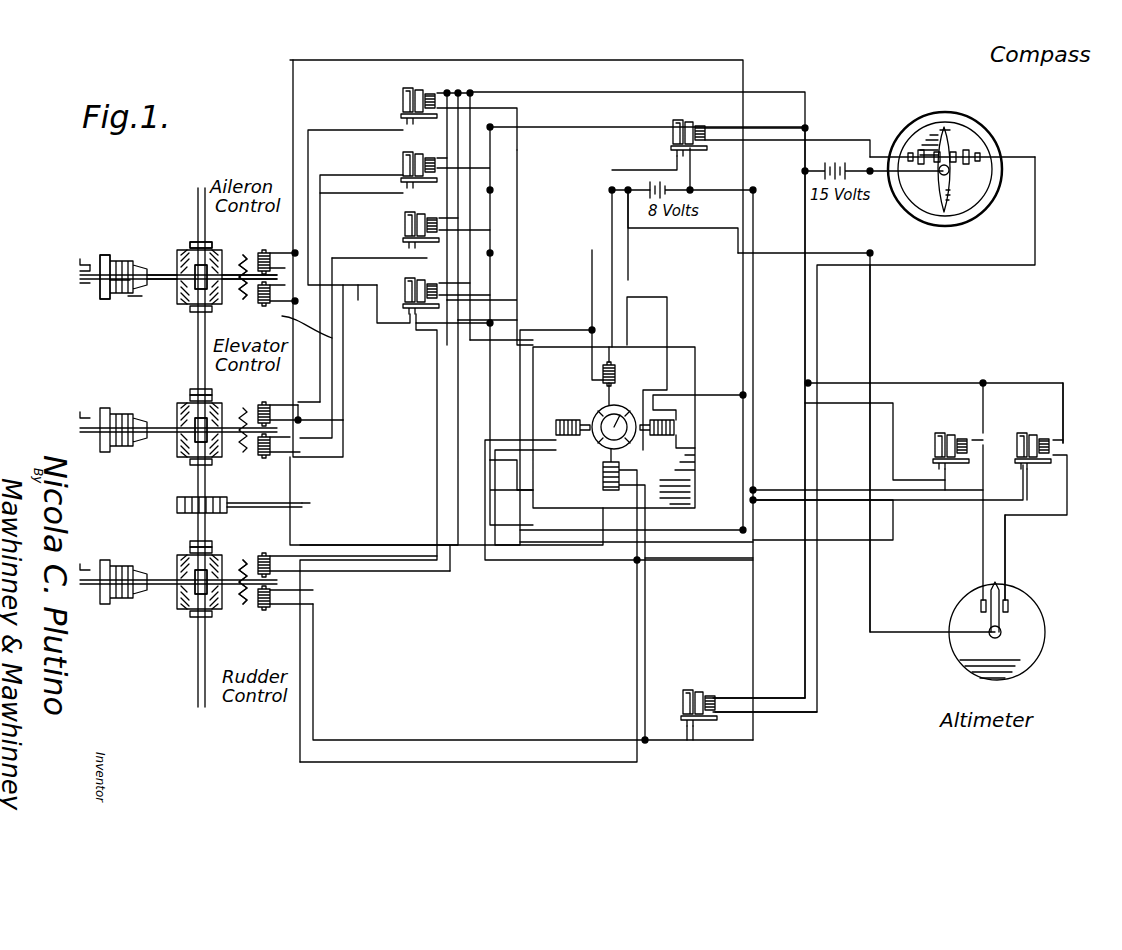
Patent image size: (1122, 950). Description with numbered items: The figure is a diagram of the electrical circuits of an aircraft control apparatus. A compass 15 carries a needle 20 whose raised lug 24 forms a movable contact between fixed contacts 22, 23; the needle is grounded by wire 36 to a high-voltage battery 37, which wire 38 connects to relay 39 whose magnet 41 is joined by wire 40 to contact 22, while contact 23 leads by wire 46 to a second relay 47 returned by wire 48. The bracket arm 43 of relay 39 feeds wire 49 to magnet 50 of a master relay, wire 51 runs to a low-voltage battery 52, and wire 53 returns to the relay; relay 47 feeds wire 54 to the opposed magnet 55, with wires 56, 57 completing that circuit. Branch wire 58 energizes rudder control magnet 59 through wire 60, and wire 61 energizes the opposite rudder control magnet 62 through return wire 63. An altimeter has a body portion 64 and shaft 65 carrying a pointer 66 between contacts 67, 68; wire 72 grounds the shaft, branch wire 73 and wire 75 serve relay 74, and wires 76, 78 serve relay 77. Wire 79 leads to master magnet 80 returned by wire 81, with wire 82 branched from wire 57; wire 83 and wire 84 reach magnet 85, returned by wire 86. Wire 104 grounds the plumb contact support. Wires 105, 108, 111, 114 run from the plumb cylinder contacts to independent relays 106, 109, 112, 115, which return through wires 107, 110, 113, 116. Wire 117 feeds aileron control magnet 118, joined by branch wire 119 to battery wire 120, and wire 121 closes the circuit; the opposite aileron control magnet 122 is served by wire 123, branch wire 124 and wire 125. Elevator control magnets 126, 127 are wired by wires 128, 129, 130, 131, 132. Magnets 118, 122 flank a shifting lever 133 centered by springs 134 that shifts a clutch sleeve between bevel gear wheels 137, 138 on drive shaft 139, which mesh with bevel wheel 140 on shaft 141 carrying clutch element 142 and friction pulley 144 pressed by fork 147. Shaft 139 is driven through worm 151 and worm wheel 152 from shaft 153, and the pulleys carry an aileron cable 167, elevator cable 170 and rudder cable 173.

The compass 15 is at (998, 134).
The compass needle 20 is at (949, 186).
The contact screw 22 is at (938, 128).
The contact screw 23 is at (963, 144).
The raised lug 24 is at (948, 124).
The wire 36 is at (878, 180).
The battery 37 is at (830, 167).
The wire 38 is at (790, 126).
The relay 39 is at (698, 142).
The wire 40 is at (750, 173).
The magnet 41 is at (704, 125).
The bracket arm 43 is at (676, 705).
The wire 46 is at (1035, 195).
The second relay 47 is at (700, 740).
The wire 48 is at (802, 225).
The wire 49 is at (595, 175).
The magnet 50 is at (620, 375).
The wire 51 is at (633, 163).
The battery 52 is at (650, 180).
The wire 53 is at (690, 184).
The wire 54 is at (626, 478).
The second magnet 55 is at (608, 487).
The wire 56 is at (730, 224).
The wire 57 is at (743, 197).
The wire 58 is at (480, 740).
The rudder control magnet 59 is at (260, 607).
The wire 60 is at (400, 762).
The wire 61 is at (366, 545).
The rudder control magnet 62 is at (260, 552).
The wire 63 is at (413, 573).
The body portion 64 is at (1042, 622).
The shaft 65 is at (1000, 634).
The pointer 66 is at (983, 585).
The contact 67 is at (978, 595).
The contact 68 is at (1010, 600).
The wire 72 is at (872, 245).
The branch wire 73 is at (940, 380).
The relay 74 is at (965, 472).
The wire 75 is at (987, 455).
The wire 76 is at (1005, 545).
The relay 77 is at (1065, 465).
The wire 78 is at (1063, 408).
The wire 79 is at (897, 420).
The magnet 80 is at (695, 448).
The wire 81 is at (712, 395).
The wire 82 is at (777, 488).
The wire 83 is at (778, 472).
The wire 84 is at (700, 542).
The magnet 85 is at (558, 420).
The wire 86 is at (495, 441).
The wire 104 is at (635, 313).
The wire 105 is at (520, 95).
The independent relay 106 is at (400, 110).
The wire 107 is at (615, 90).
The wire 108 is at (518, 188).
The independent relay 109 is at (403, 188).
The wire 110 is at (408, 146).
The wire 111 is at (518, 230).
The independent relay 112 is at (400, 243).
The wire 113 is at (520, 206).
The wire 114 is at (520, 492).
The independent relay 115 is at (377, 323).
The wire 116 is at (510, 270).
The wire 117 is at (325, 130).
The aileron control magnet 118 is at (250, 242).
The branch wire 119 is at (267, 252).
The battery wire 120 is at (290, 110).
The wire 121 is at (502, 60).
The aileron control magnet 122 is at (258, 304).
The wire 123 is at (358, 302).
The branch wire 124 is at (332, 338).
The wire 125 is at (416, 333).
The elevator control magnet 126 is at (260, 404).
The elevator control magnet 127 is at (263, 453).
The wire 128 is at (322, 372).
The wire 129 is at (340, 418).
The wire 130 is at (405, 204).
The wire 131 is at (338, 394).
The wire 132 is at (415, 265).
The shifting lever 133 is at (224, 263).
The opposed springs 134 is at (245, 606).
The bevel gear wheel 137 is at (188, 326).
The bevel gear wheel 138 is at (195, 244).
The drive shaft 139 is at (198, 188).
The bevel wheel 140 is at (183, 295).
The shaft 141 is at (157, 271).
The clutch element 142 is at (139, 312).
The pulley 144 is at (122, 300).
The fork 147 is at (83, 267).
The worm 151 is at (226, 500).
The worm wheel 152 is at (177, 505).
The shaft 153 is at (302, 501).
The cable 167 is at (118, 248).
The cable 170 is at (118, 408).
The control cable 173 is at (125, 557).